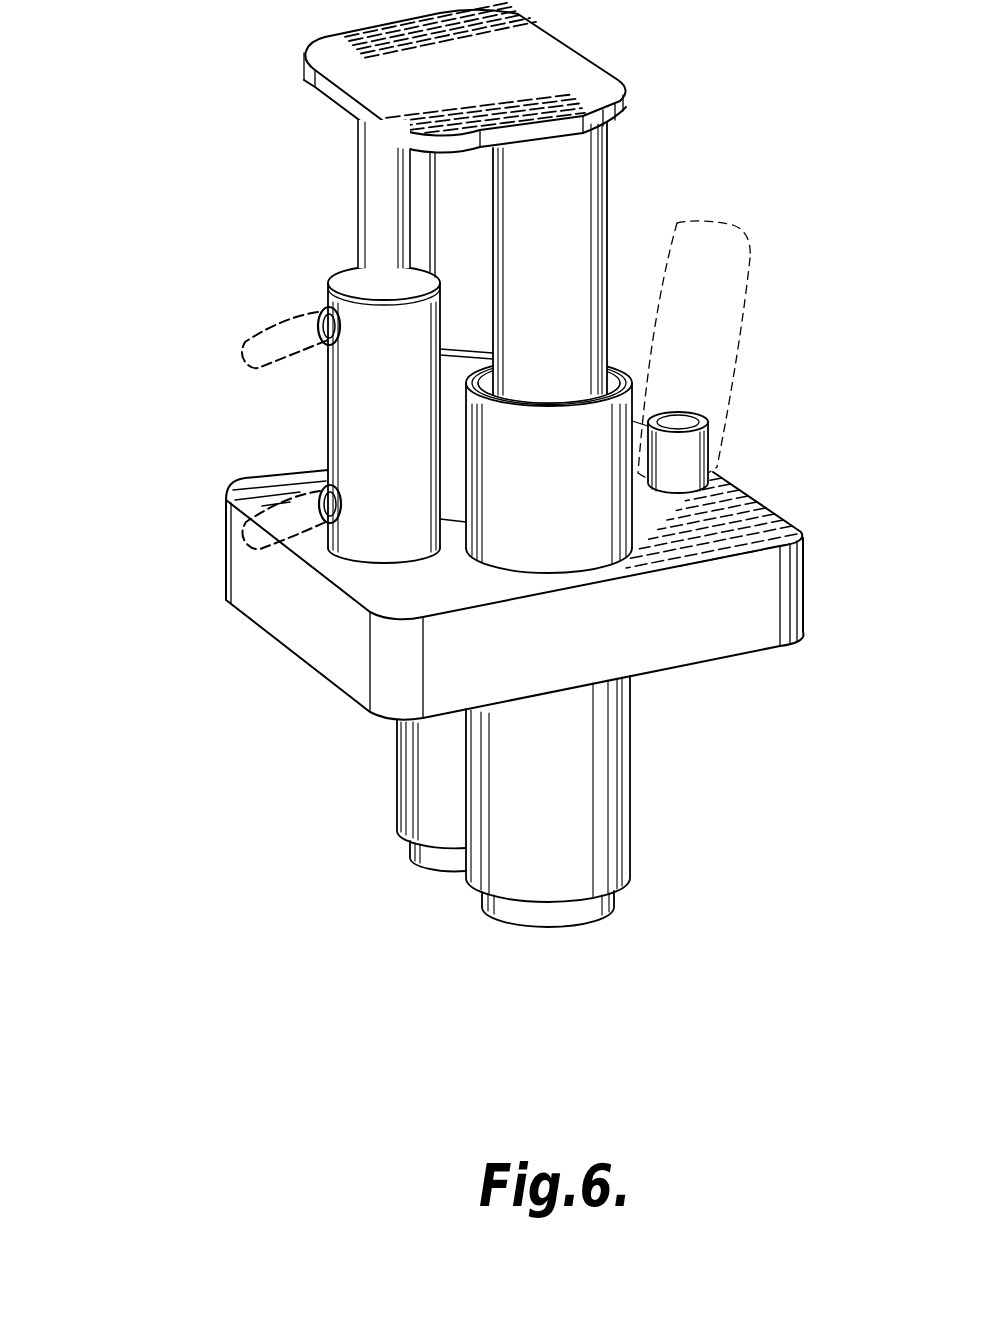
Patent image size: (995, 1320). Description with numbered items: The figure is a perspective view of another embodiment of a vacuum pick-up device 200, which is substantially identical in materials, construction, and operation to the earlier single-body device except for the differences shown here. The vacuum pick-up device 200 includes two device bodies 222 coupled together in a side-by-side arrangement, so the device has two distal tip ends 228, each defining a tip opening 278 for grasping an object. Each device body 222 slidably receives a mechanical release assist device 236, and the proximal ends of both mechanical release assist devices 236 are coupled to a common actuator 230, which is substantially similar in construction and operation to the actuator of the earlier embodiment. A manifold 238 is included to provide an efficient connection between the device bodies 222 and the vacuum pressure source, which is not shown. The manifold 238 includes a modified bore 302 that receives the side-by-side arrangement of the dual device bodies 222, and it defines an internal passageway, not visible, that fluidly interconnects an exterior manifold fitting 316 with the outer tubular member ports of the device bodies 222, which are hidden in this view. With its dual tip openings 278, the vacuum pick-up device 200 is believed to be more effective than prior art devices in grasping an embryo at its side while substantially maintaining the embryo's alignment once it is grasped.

The vacuum pick-up device 200 is at (132, 116).
The mechanical release assist device 236 is at (458, 200).
The actuator 230 is at (290, 301).
The exterior manifold fitting 316 is at (712, 449).
The manifold 238 is at (798, 598).
The modified bore 302 is at (528, 572).
The device body 222 is at (405, 760).
The distal tip end 228 is at (440, 858).
The tip opening 278 is at (451, 894).